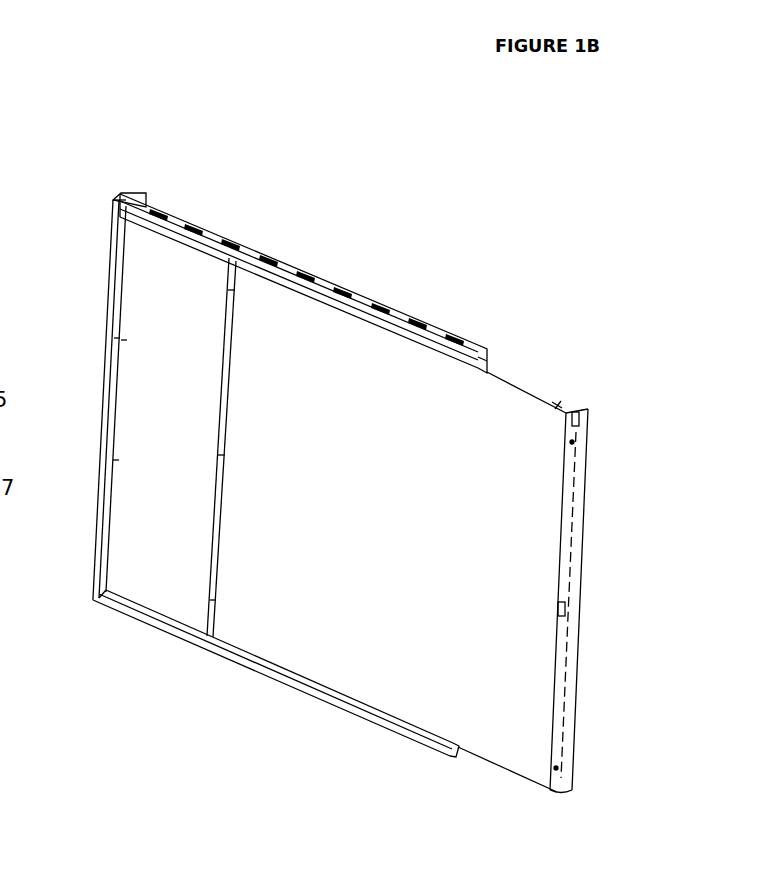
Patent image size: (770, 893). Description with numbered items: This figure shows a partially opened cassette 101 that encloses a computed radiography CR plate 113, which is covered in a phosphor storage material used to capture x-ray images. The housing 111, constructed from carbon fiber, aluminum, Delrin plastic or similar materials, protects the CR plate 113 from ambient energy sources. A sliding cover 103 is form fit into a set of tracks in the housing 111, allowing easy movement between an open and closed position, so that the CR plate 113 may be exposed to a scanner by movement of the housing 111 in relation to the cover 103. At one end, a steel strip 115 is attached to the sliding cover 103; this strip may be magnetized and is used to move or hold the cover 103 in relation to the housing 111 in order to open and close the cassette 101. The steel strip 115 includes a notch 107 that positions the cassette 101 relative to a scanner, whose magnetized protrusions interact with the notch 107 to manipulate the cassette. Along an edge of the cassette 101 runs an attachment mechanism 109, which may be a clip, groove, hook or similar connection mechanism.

The cassette 101 is at (142, 240).
The sliding cover 103 is at (432, 410).
The notch 107 is at (567, 611).
The attachment mechanism 109 is at (323, 278).
The housing 111 is at (150, 622).
The CR plate 113 is at (172, 277).
The steel strip 115 is at (587, 485).